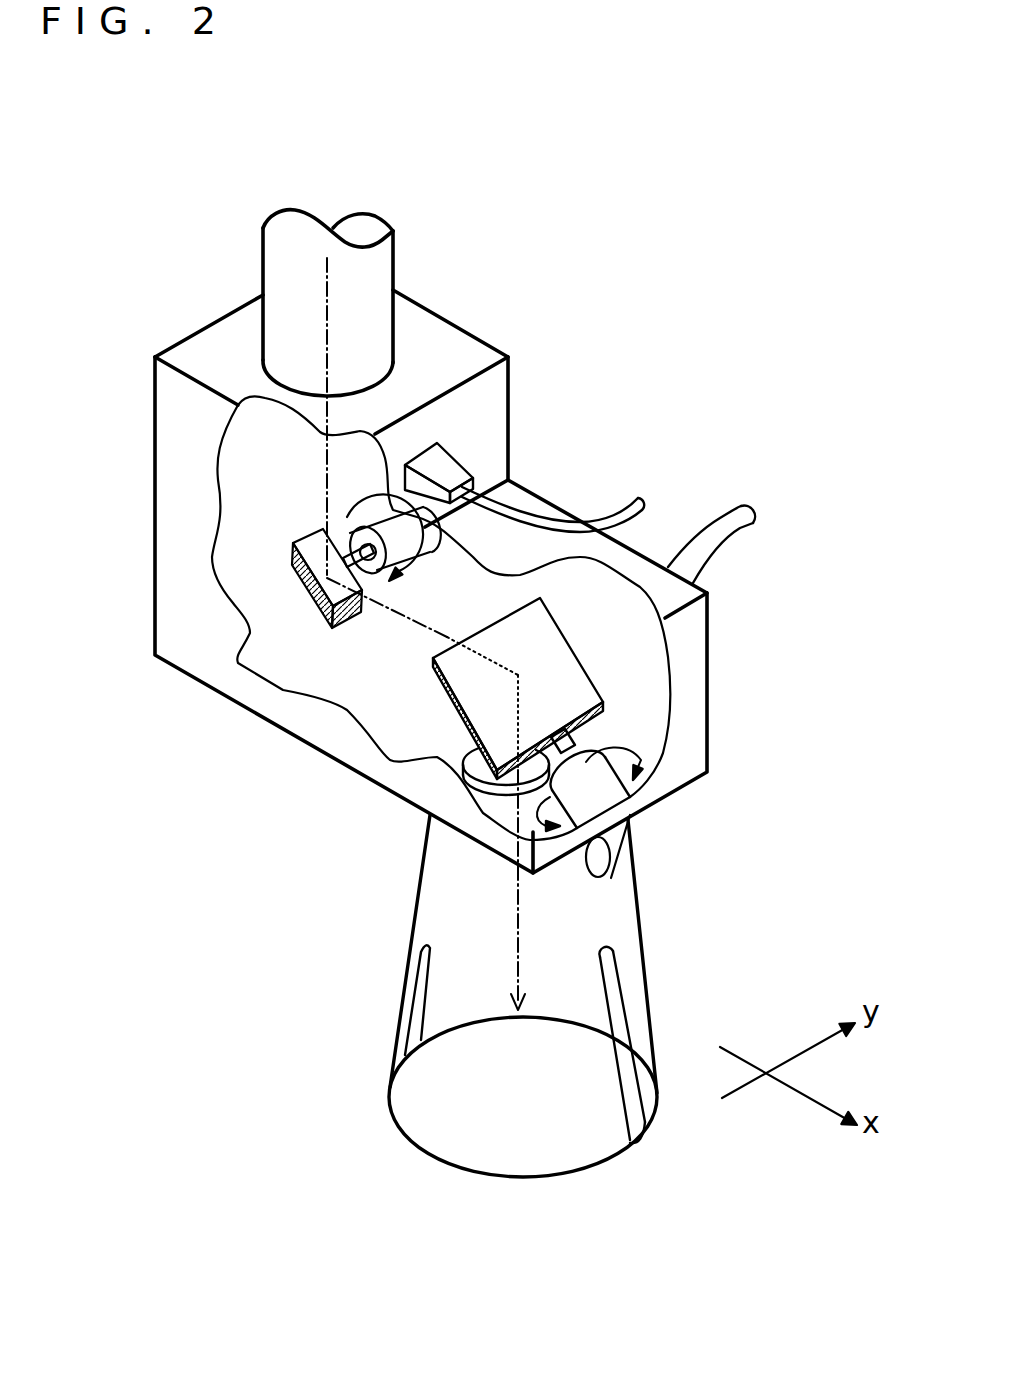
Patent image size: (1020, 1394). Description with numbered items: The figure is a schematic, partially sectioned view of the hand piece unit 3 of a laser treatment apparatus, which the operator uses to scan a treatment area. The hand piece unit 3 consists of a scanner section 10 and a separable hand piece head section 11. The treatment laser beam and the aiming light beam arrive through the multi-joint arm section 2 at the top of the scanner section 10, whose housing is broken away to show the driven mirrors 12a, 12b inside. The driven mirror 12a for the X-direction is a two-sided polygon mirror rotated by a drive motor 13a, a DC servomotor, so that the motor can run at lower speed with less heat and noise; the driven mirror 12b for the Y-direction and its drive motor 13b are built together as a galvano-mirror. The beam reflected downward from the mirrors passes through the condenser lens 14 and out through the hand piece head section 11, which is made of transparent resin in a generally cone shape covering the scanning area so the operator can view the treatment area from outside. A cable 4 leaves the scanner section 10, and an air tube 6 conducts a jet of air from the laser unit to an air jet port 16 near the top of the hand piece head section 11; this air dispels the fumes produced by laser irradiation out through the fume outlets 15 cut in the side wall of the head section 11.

The multi-joint arm section 2 is at (373, 312).
The hand piece unit 3 is at (598, 368).
The cable 4 is at (595, 512).
The air tube 6 is at (708, 535).
The scanner section 10 is at (173, 618).
The hand piece head section 11 is at (440, 908).
The driven mirror 12a is at (328, 580).
The driven mirror 12b is at (473, 693).
The drive motor 13a is at (333, 527).
The drive motor 13b is at (588, 750).
The condenser lens 14 is at (480, 753).
The fume outlets 15 is at (425, 1072).
The air jet port 16 is at (605, 858).